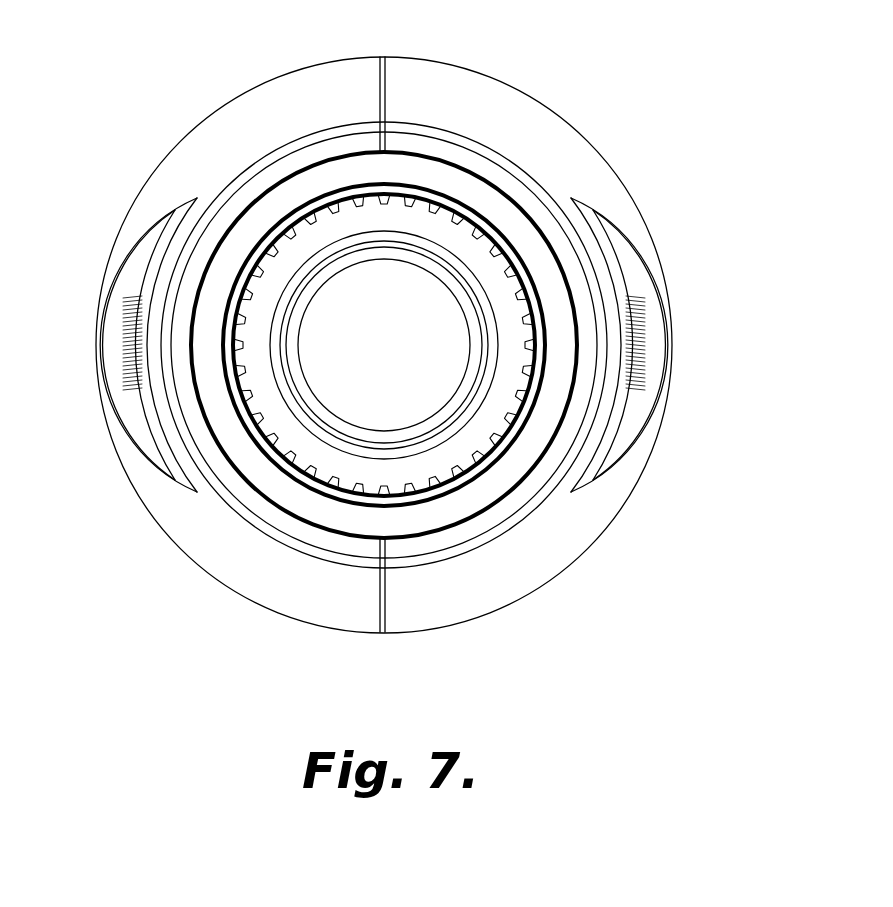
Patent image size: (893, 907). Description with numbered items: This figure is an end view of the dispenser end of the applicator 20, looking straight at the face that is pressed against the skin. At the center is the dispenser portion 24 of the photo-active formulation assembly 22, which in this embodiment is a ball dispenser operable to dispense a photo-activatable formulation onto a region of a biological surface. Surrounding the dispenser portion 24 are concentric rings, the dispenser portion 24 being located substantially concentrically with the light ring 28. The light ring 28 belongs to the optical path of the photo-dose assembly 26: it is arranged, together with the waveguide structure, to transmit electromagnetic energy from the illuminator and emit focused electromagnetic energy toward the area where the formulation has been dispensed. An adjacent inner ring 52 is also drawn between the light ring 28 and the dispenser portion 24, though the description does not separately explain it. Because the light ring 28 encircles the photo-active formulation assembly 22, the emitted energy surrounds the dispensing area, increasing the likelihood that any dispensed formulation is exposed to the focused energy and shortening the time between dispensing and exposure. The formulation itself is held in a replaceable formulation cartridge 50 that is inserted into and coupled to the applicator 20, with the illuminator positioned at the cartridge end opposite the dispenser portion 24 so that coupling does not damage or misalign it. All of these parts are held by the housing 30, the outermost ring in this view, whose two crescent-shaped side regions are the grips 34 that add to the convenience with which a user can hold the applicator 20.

The applicator 20 is at (703, 78).
The photo-active formulation assembly 22 is at (308, 437).
The dispenser portion 24 is at (375, 420).
The photo-dose assembly 26 is at (508, 482).
The light ring 28 is at (453, 510).
The housing 30 is at (463, 88).
The grips 34 is at (135, 282).
The replaceable formulation cartridge 50 is at (335, 232).
The inner sealing ring 52 is at (483, 223).